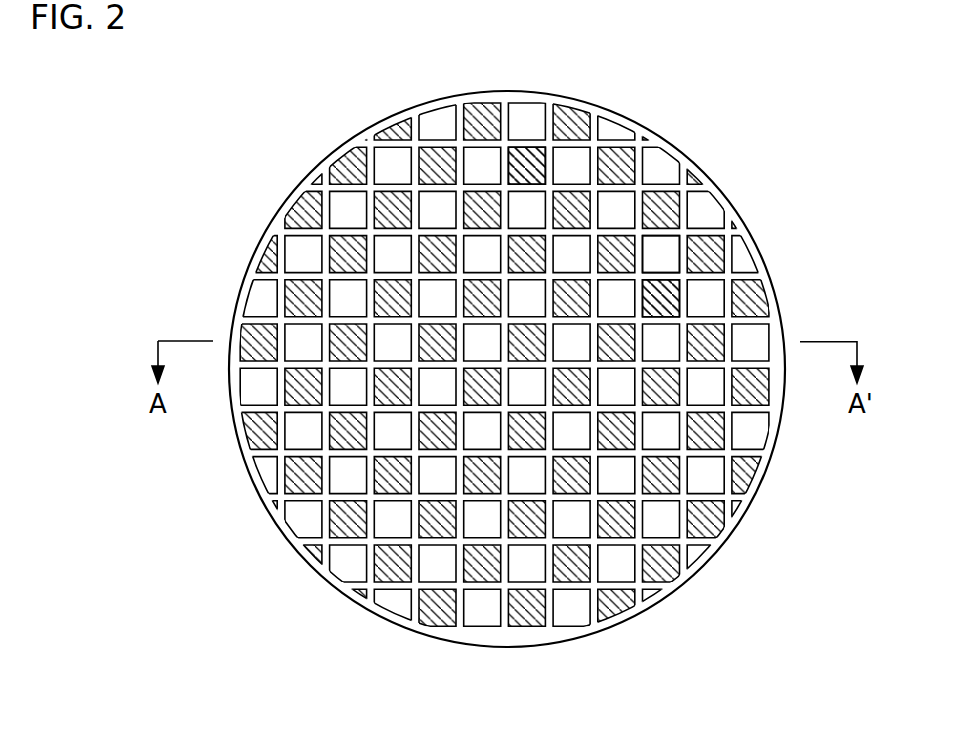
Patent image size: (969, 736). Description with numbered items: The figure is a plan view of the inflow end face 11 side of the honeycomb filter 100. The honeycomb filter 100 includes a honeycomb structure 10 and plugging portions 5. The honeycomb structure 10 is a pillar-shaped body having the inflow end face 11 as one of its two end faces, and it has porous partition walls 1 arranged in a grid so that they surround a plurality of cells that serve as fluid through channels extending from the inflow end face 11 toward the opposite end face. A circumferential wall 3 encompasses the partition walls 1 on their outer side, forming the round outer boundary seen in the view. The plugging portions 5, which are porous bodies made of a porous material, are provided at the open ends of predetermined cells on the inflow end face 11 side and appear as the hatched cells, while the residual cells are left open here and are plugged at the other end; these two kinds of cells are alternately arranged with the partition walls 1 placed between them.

The honeycomb filter 100 is at (850, 57).
The honeycomb structure 10 is at (798, 322).
The inflow end face 11 is at (311, 147).
The partition wall 1 is at (622, 188).
The circumferential wall 3 is at (727, 533).
The plugging portion 5 is at (525, 170).